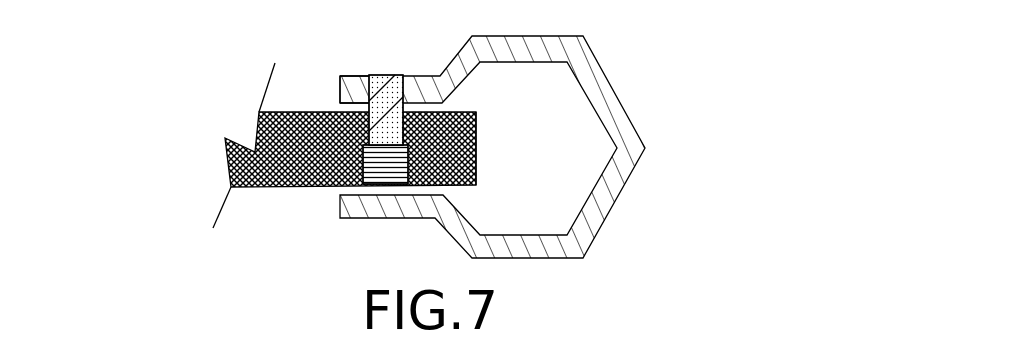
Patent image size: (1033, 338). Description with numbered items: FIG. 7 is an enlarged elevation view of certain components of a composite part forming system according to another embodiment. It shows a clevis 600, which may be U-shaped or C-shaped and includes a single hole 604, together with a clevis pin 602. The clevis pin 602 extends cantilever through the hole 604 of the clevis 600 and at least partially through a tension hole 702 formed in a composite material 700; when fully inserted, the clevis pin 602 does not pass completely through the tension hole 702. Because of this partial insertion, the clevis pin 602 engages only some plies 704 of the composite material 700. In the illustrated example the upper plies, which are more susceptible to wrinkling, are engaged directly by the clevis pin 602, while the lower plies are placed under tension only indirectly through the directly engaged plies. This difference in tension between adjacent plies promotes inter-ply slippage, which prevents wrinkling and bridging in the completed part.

The clevis 600 is at (598, 77).
The clevis pin 602 is at (383, 75).
The hole 604 is at (352, 56).
The composite material 700 is at (457, 111).
The tension hole 702 is at (370, 163).
The plies 704 is at (477, 125).